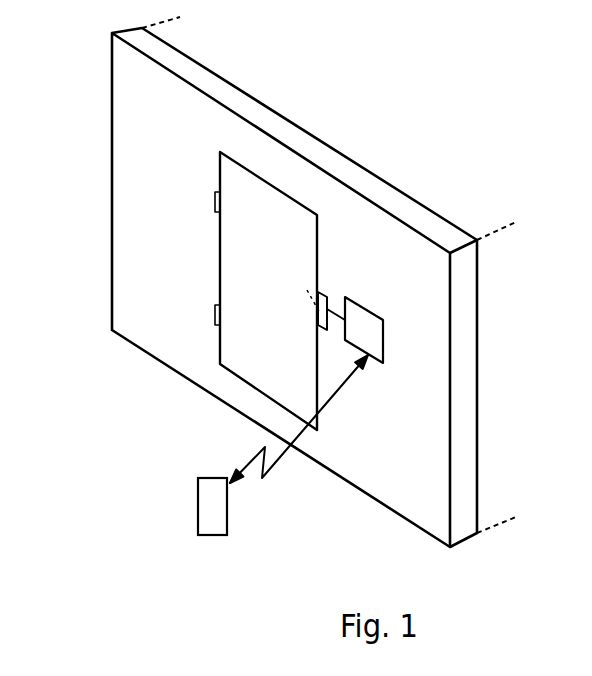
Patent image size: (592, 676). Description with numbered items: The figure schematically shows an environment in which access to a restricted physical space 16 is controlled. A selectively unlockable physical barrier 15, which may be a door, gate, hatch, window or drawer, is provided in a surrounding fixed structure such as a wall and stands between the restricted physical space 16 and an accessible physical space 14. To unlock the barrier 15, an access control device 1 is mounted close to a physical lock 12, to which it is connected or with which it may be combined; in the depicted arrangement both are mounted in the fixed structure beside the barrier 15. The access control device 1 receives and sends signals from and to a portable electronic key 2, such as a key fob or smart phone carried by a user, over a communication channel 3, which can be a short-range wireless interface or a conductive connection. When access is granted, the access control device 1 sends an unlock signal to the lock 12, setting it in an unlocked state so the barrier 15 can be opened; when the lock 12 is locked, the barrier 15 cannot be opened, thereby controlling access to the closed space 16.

The access control device 1 is at (372, 313).
The electronic key 2 is at (198, 494).
The communication channel 3 is at (268, 467).
The physical lock 12 is at (325, 293).
The accessible physical space 14 is at (58, 177).
The physical barrier 15 is at (280, 282).
The restricted physical space 16 is at (448, 142).